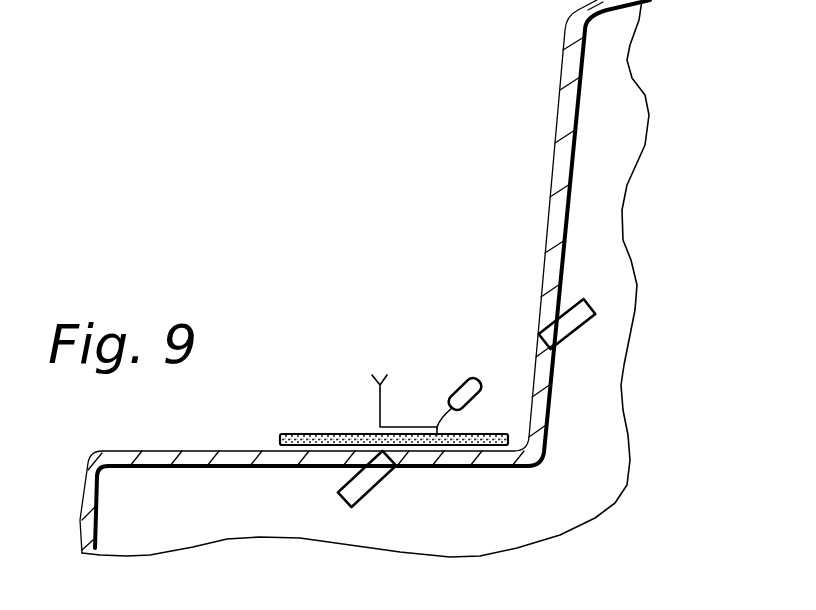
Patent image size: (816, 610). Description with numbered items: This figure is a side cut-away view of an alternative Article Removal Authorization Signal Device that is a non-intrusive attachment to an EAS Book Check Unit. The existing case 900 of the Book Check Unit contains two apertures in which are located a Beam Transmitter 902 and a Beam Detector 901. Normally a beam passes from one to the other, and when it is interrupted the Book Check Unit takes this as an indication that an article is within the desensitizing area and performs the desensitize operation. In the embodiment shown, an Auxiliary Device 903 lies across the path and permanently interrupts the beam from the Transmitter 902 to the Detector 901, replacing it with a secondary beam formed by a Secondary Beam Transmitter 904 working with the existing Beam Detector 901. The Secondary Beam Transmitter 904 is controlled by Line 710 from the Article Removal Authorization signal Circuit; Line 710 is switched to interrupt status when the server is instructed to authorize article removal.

The existing case 900 is at (562, 68).
The Beam Detector 901 is at (590, 307).
The Beam Transmitter 902 is at (340, 503).
The Auxiliary Device 903 is at (298, 433).
The Secondary Beam Transmitter 904 is at (461, 378).
The Line 710 is at (378, 395).